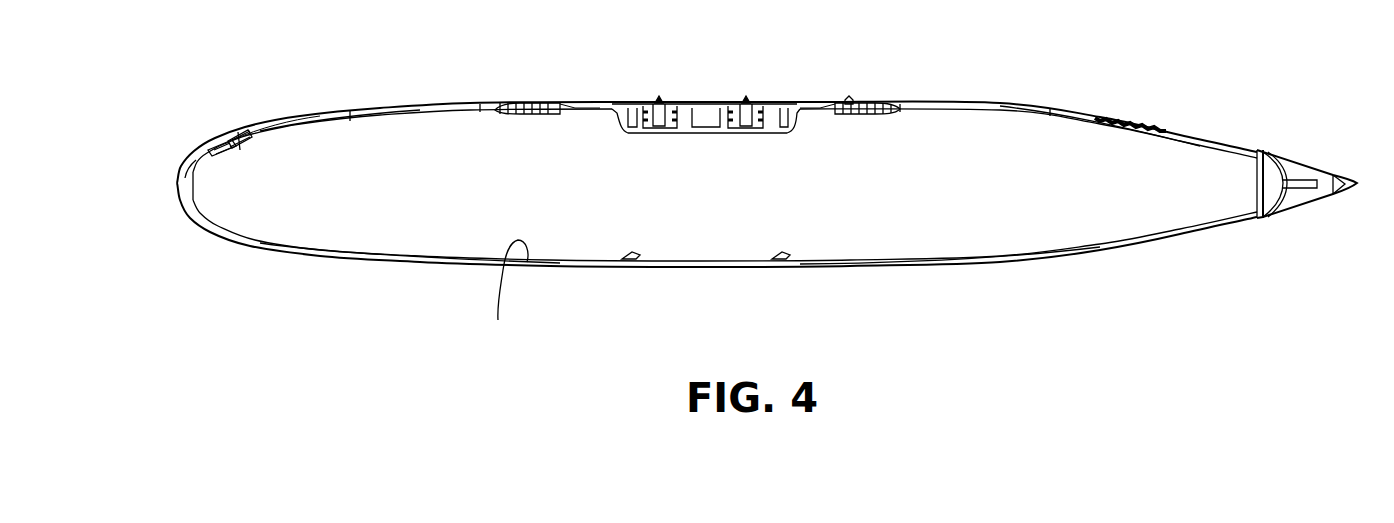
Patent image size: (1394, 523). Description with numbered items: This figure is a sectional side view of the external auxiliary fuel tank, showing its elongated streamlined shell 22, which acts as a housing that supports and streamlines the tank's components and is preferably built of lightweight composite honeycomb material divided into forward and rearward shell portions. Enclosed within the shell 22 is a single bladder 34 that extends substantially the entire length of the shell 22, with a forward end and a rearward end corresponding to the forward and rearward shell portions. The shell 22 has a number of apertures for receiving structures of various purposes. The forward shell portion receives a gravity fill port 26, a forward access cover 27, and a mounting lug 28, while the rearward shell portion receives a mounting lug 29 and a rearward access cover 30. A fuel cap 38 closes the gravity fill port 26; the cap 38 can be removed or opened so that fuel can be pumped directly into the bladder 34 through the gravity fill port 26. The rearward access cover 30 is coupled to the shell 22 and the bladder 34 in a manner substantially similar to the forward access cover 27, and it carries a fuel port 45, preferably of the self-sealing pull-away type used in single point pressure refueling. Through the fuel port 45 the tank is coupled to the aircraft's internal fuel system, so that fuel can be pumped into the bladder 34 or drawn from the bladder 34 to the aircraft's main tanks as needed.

The shell 22 is at (583, 266).
The gravity fill port 26 is at (238, 132).
The forward access cover 27 is at (520, 101).
The mounting lug 28 is at (652, 97).
The mounting lug 29 is at (753, 98).
The rearward access cover 30 is at (873, 97).
The bladder 34 is at (505, 298).
The fuel cap 38 is at (227, 148).
The fuel port 45 is at (849, 100).